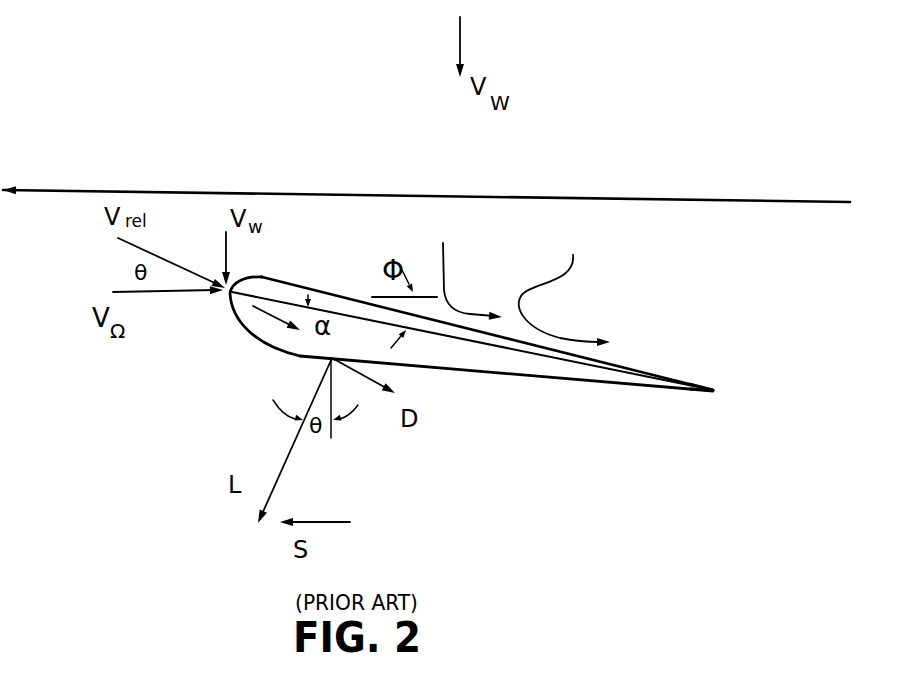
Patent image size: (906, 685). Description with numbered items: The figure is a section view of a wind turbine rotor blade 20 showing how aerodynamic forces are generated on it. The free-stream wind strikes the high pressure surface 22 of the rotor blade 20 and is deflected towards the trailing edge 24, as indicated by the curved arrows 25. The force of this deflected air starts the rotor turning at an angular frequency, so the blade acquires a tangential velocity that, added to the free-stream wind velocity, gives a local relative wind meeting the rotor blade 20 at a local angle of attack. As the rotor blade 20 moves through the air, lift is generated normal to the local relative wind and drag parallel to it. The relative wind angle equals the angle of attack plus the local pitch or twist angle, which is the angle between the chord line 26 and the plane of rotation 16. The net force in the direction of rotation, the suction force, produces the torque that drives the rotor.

The plane of rotation 16 is at (788, 202).
The rotor blade 20 is at (503, 353).
The high pressure surface 22 is at (623, 366).
The trailing edge 24 is at (715, 389).
The curved arrows 25 is at (445, 279).
The chord line 26 is at (565, 362).